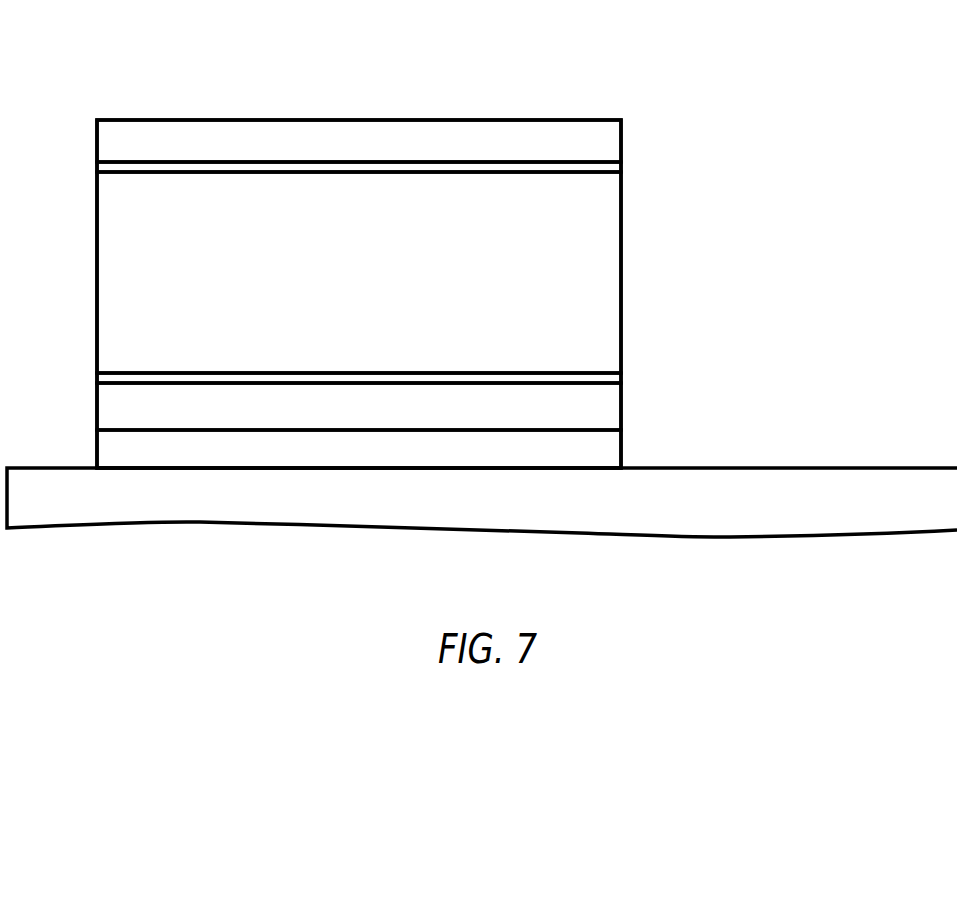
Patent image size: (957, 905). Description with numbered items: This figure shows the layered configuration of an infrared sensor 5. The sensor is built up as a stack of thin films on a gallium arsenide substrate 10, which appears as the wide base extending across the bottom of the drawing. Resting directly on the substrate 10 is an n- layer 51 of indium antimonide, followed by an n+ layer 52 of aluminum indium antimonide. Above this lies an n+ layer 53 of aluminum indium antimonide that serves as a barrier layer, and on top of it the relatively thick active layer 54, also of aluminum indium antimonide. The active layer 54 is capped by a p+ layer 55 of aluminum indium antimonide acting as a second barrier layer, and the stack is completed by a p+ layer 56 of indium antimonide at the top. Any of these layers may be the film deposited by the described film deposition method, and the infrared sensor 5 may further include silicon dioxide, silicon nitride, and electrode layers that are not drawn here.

The infrared sensor 5 is at (113, 58).
The gallium arsenide substrate 10 is at (893, 468).
The n- layer 51 is at (622, 452).
The n+ layer 52 is at (622, 405).
The n+ layer (barrier layer) 53 is at (622, 374).
The active layer 54 is at (622, 268).
The p+ layer (barrier layer) 55 is at (622, 164).
The p+ layer 56 is at (622, 124).